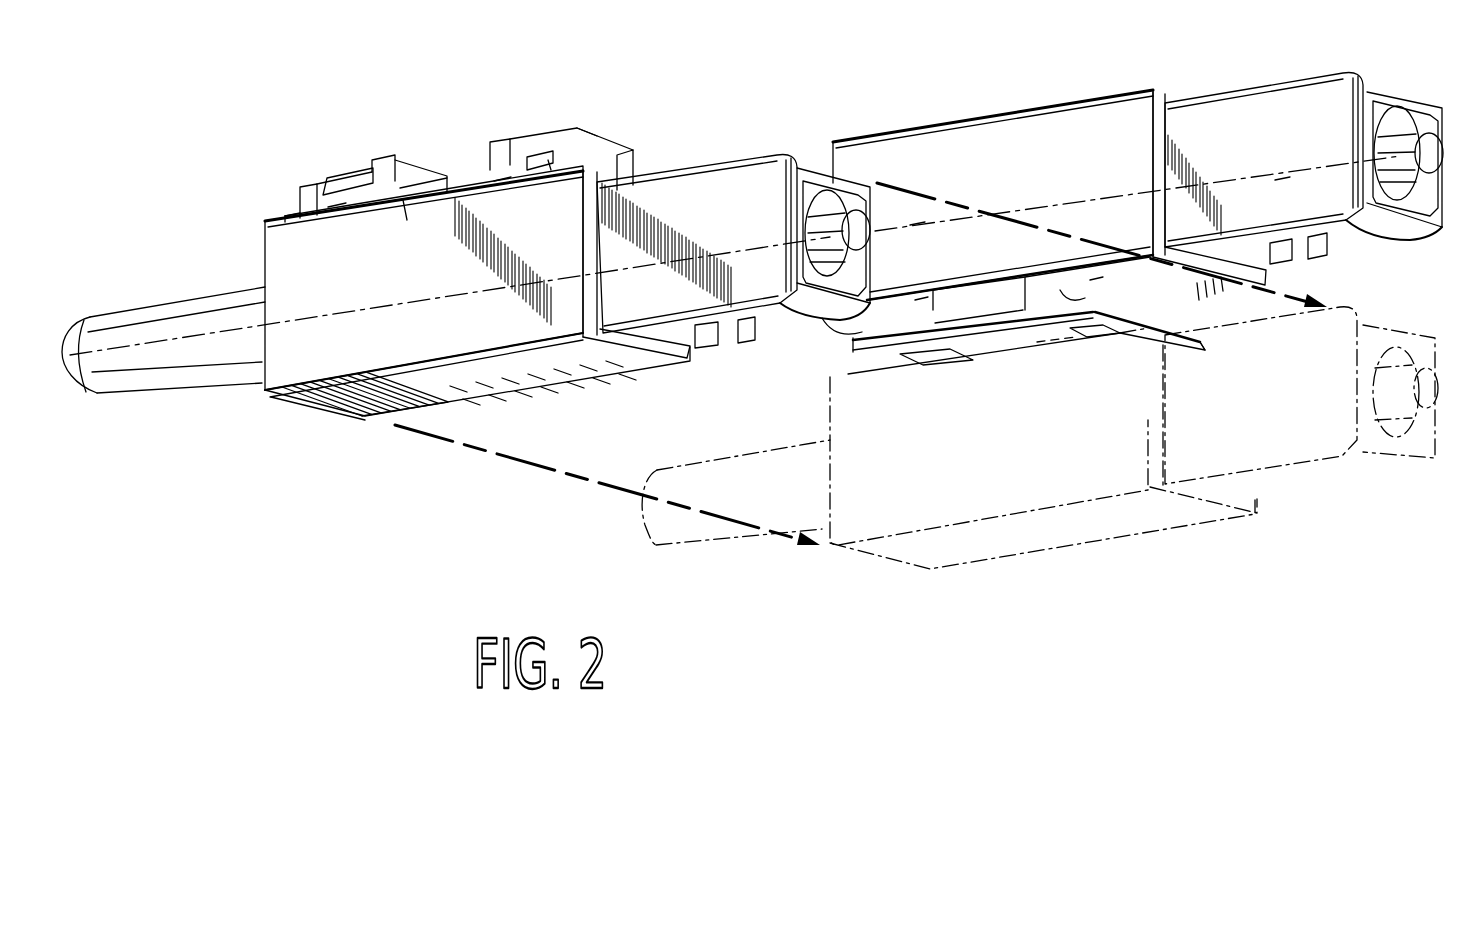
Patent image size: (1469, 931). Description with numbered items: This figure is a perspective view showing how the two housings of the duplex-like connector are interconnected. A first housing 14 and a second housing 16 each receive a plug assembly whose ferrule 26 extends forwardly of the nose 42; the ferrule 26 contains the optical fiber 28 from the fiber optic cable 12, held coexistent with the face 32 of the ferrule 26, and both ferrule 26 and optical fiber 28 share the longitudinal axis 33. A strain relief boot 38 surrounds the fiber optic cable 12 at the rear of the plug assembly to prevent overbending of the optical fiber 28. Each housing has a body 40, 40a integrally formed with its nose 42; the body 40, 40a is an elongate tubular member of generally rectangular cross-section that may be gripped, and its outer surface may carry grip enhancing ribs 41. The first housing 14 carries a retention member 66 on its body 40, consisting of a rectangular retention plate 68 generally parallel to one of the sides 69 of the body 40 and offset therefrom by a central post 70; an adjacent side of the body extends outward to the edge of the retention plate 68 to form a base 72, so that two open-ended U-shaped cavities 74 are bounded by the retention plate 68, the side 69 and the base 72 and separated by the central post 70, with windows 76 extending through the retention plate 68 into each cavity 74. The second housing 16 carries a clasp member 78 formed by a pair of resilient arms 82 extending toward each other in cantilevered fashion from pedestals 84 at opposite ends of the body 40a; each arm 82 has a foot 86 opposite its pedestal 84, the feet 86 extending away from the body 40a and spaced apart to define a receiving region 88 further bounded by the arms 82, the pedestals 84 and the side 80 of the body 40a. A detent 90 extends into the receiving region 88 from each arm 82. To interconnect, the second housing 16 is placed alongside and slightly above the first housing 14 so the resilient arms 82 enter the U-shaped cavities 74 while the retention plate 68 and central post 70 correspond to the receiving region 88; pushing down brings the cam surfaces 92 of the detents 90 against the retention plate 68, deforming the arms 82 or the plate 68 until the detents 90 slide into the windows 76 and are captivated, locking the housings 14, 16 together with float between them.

The fiber optic cable 12 is at (73, 377).
The first housing 14 is at (1049, 171).
The second housing 16 is at (300, 259).
The ferrule 26 is at (830, 233).
The optical fiber 28 is at (860, 218).
The face 32 is at (860, 227).
The longitudinal axis 33 is at (913, 227).
The strain relief boot 38 is at (210, 353).
The body 40 is at (1037, 107).
The body 40a is at (575, 383).
The ribs 41 is at (330, 400).
The nose 42 is at (717, 200).
The retention member 66 is at (1004, 333).
The retention plate 68 is at (1000, 364).
The side of the body 69 is at (930, 300).
The central post 70 is at (962, 316).
The base 72 is at (1207, 330).
The U-shaped cavities 74 is at (893, 317).
The windows 76 is at (940, 360).
The clasp member 78 is at (450, 211).
The side of the body 80 is at (283, 217).
The resilient arms 82 is at (323, 178).
The pedestals 84 is at (308, 204).
The feet 86 is at (377, 167).
The receiving region 88 is at (460, 170).
The detent 90 is at (333, 207).
The cam surfaces 92 is at (410, 207).